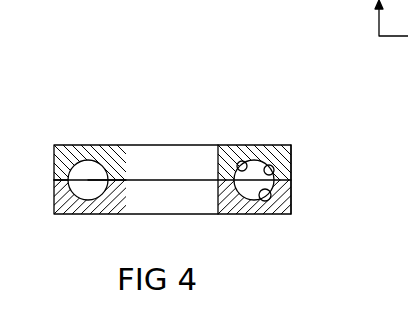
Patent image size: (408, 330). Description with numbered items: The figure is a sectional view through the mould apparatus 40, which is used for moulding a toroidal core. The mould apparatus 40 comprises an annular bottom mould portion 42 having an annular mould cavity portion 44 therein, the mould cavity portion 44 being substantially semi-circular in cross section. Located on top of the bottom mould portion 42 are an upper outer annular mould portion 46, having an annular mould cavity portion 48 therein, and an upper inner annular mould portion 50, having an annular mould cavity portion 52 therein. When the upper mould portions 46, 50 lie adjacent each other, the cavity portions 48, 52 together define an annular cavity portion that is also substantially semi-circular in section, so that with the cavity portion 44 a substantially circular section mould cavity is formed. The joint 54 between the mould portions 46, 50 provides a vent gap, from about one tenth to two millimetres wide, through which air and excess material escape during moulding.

The mould apparatus 40 is at (227, 104).
The annular bottom mould portion 42 is at (240, 198).
The annular mould cavity portion 44 is at (263, 203).
The upper outer annular mould portion 46 is at (288, 147).
The annular mould cavity portion 48 is at (273, 167).
The upper inner annular mould portion 50 is at (228, 158).
The annular mould cavity portion 52 is at (246, 158).
The joint 54 is at (88, 161).